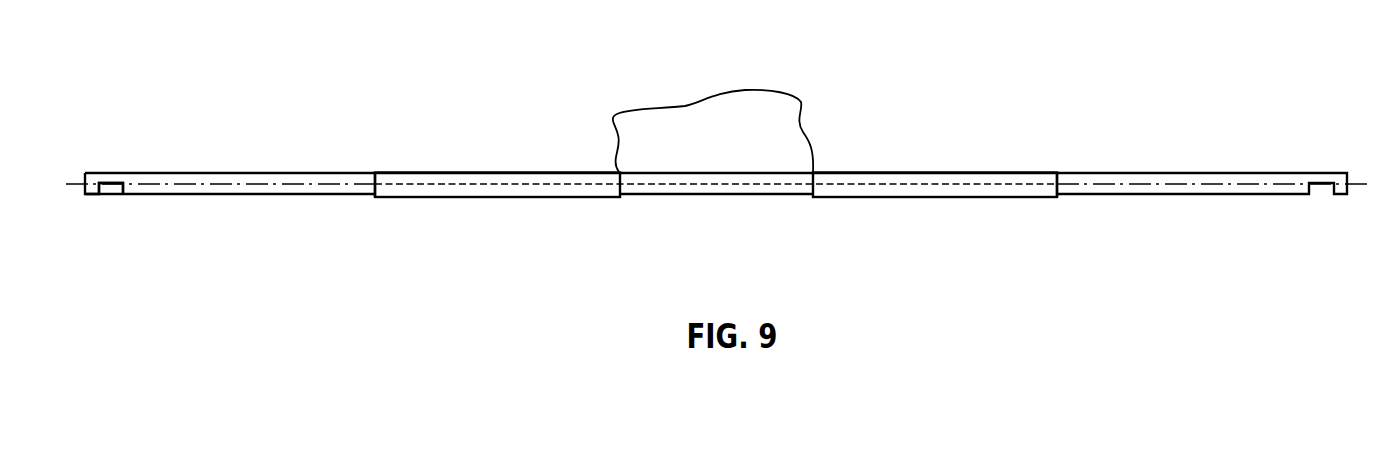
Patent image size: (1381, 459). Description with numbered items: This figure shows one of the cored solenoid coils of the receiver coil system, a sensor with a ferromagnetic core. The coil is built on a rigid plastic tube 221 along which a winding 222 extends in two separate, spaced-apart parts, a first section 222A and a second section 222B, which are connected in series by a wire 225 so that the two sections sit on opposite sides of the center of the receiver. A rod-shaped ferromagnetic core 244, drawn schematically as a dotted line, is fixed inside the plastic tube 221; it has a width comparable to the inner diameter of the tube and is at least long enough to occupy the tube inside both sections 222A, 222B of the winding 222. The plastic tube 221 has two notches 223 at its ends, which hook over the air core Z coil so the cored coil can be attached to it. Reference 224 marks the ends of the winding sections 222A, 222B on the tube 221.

The rigid plastic tube 221 is at (269, 172).
The winding 222 is at (685, 175).
The first winding section 222A is at (417, 197).
The second winding section 222B is at (888, 197).
The notch 223 is at (112, 172).
The sleeve edge 224 is at (373, 172).
The wire 225 is at (698, 98).
The ferromagnetic core 244 is at (517, 186).